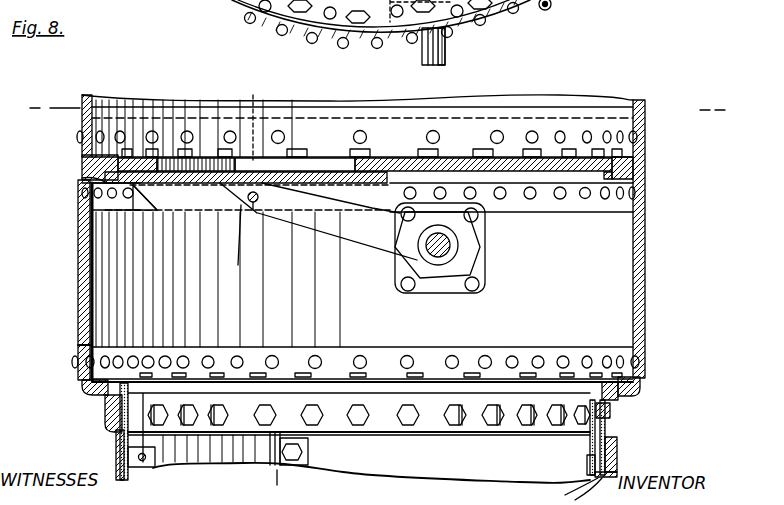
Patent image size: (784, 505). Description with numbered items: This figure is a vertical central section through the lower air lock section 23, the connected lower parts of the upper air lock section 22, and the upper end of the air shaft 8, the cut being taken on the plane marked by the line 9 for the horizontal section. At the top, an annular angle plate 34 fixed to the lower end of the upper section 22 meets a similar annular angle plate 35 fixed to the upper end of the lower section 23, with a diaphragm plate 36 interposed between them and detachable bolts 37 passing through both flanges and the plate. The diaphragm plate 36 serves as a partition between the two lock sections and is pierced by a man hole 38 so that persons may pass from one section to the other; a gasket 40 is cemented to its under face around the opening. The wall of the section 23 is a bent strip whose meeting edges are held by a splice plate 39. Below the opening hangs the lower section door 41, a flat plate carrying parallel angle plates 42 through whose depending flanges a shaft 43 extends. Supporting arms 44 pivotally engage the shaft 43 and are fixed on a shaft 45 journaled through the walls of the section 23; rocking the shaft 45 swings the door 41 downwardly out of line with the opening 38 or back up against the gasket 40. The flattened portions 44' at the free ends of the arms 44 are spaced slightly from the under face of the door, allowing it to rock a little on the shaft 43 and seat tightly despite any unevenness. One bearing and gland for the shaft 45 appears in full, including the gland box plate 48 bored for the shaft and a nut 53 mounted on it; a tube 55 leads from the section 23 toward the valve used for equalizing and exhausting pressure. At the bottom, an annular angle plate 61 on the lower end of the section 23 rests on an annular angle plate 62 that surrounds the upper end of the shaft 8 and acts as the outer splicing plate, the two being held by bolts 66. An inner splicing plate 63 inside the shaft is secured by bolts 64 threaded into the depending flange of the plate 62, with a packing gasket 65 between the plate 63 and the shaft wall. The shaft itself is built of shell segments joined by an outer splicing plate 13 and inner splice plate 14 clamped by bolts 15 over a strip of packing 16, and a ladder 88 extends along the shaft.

The shaft 8 is at (116, 458).
The section line 9 is at (373, 109).
The splicing plate 13 is at (617, 445).
The splice plate 14 is at (433, 487).
The bolts 15 is at (292, 470).
The strip of packing 16 is at (272, 462).
The upper air lock section 22 is at (645, 106).
The lower air lock section 23 is at (82, 300).
The annular angle plate 34 is at (316, 128).
The annular angle plate 35 is at (638, 205).
The diaphragm plate 36 is at (82, 160).
The bolts 37 is at (187, 148).
The man hole 38 is at (322, 170).
The splice plate 39 is at (80, 346).
The gasket 40 is at (374, 170).
The lower section door 41 is at (176, 190).
The angle plates 42 is at (212, 205).
The shaft 43 is at (254, 215).
The supporting arms 44 is at (337, 226).
The flattened portions 44' is at (241, 245).
The shaft 45 is at (448, 242).
The gland box plate 48 is at (480, 268).
The nut 53 is at (480, 252).
The tube 55 is at (552, 5).
The annular angle plate 61 is at (505, 354).
The annular angle plate 62 is at (641, 392).
The inner splicing plate 63 is at (386, 428).
The bolts 64 is at (452, 424).
The packing gasket 65 is at (110, 416).
The bolts 66 is at (100, 384).
The ladder 88 is at (130, 470).